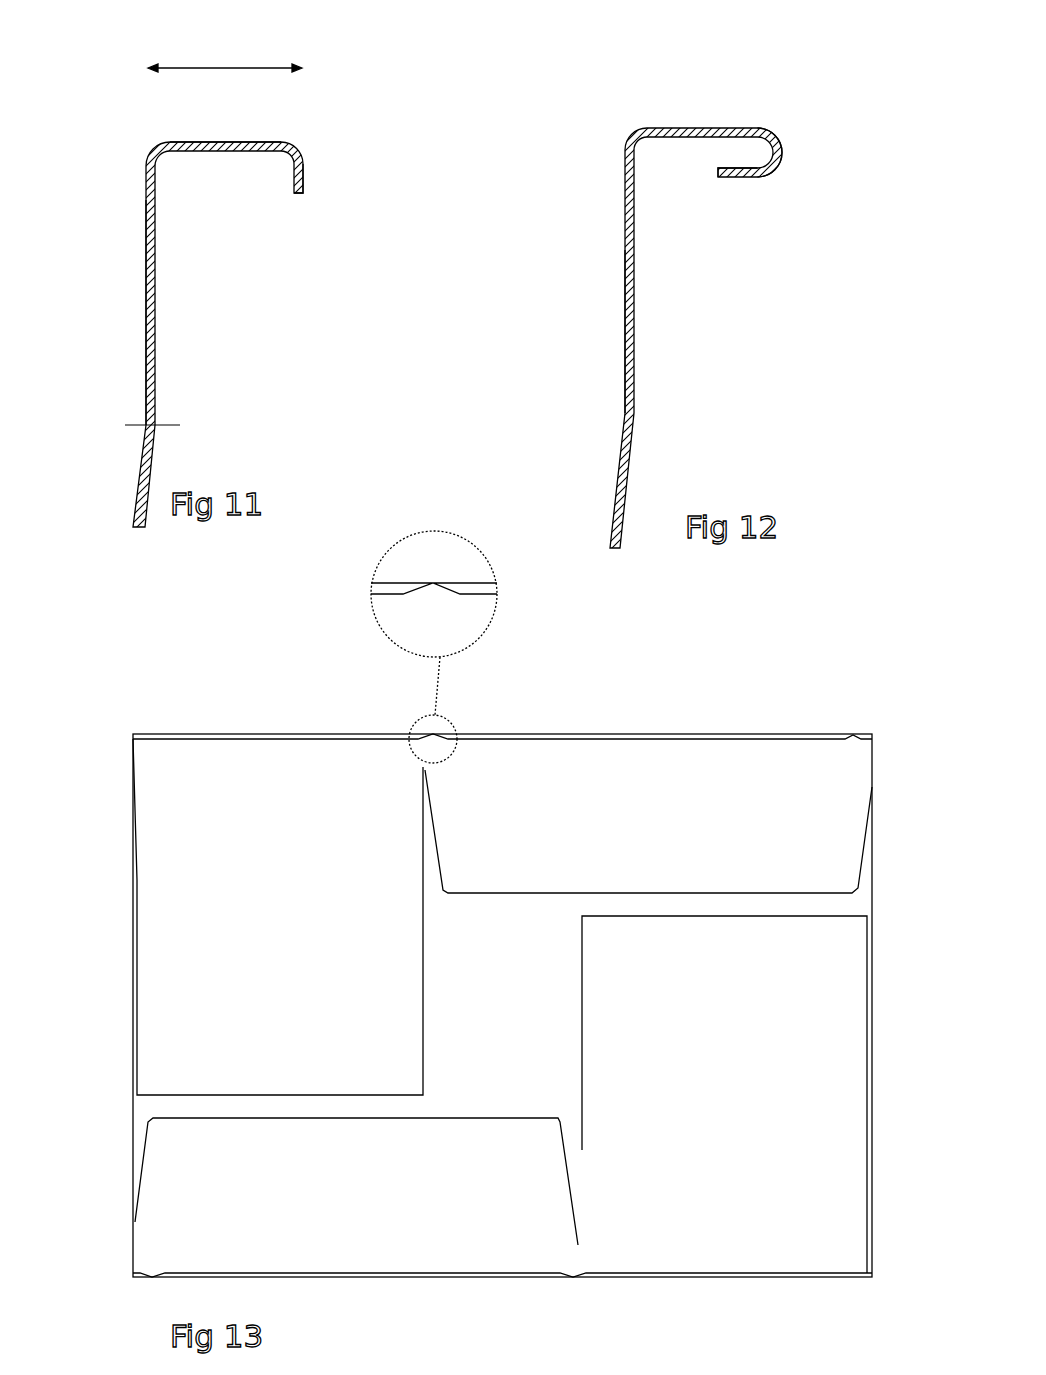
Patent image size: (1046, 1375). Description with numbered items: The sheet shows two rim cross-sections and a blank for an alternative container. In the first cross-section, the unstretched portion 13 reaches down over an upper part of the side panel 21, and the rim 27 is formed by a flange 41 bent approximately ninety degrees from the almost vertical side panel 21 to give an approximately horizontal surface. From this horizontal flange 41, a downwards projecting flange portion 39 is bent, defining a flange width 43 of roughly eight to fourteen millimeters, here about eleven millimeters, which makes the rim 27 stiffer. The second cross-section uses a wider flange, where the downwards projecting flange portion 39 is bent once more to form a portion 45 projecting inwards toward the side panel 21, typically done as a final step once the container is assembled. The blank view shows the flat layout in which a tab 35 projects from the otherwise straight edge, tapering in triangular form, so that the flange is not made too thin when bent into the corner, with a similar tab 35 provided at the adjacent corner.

In FIG. 11, the unstretched portion 13 is at (146, 272).
In FIG. 12, the side panel 21 is at (626, 413).
In FIG. 11, the rim 27 is at (278, 122).
In FIG. 12, the rim 27 is at (732, 92).
In FIG. 13, the tab 35 is at (433, 588).
In FIG. 11, the downwards projecting flange portion 39 is at (304, 177).
In FIG. 12, the downwards projecting flange portion 39 is at (781, 153).
In FIG. 11, the flange 41 is at (200, 147).
In FIG. 11, the flange width 43 is at (215, 67).
In FIG. 12, the inwards projecting portion 45 is at (732, 178).